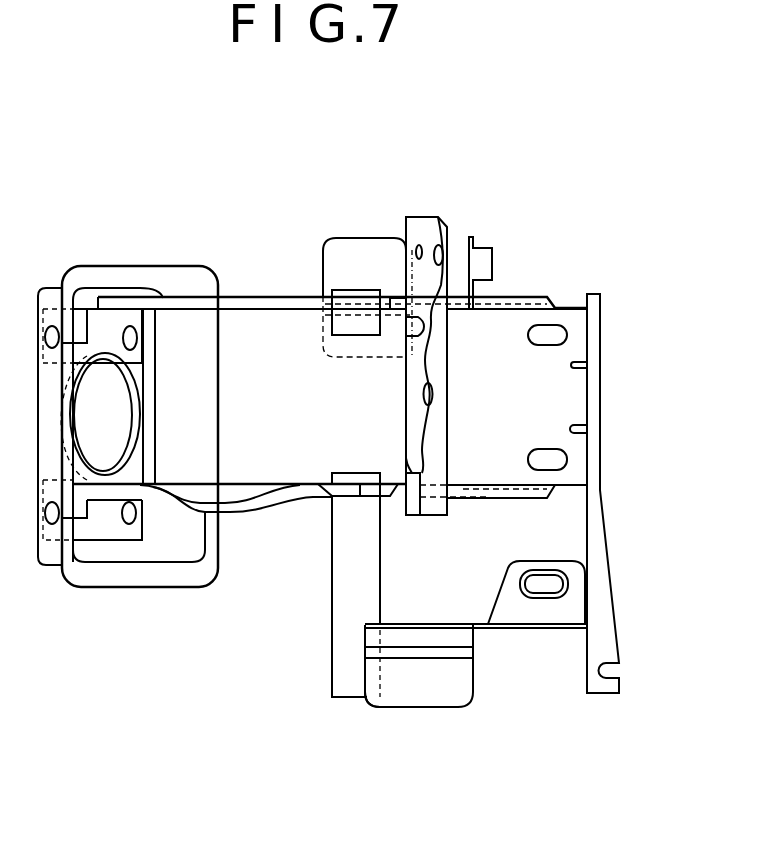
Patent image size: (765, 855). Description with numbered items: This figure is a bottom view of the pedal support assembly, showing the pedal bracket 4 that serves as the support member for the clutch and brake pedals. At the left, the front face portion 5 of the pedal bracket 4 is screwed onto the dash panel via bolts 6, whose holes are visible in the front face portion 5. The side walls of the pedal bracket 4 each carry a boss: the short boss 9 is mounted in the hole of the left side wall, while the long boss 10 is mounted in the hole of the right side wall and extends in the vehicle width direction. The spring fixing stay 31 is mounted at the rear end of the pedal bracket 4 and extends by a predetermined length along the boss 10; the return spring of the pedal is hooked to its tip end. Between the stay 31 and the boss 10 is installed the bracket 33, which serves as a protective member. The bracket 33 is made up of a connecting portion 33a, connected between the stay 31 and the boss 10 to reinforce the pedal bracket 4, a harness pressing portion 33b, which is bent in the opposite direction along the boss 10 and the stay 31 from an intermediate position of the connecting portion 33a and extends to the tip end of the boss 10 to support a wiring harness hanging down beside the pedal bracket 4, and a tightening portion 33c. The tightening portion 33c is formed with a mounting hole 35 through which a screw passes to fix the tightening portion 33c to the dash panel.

The pedal bracket 4 is at (498, 322).
The front face portion 5 is at (153, 586).
The bolts 6 is at (131, 518).
The short boss 9 is at (345, 290).
The long boss 10 is at (338, 665).
The spring fixing stay 31 is at (620, 638).
The bracket 33 is at (452, 708).
The connecting portion 33a is at (482, 622).
The harness pressing portion 33b is at (389, 707).
The tightening portion 33c is at (558, 612).
The mounting hole 35 is at (543, 580).